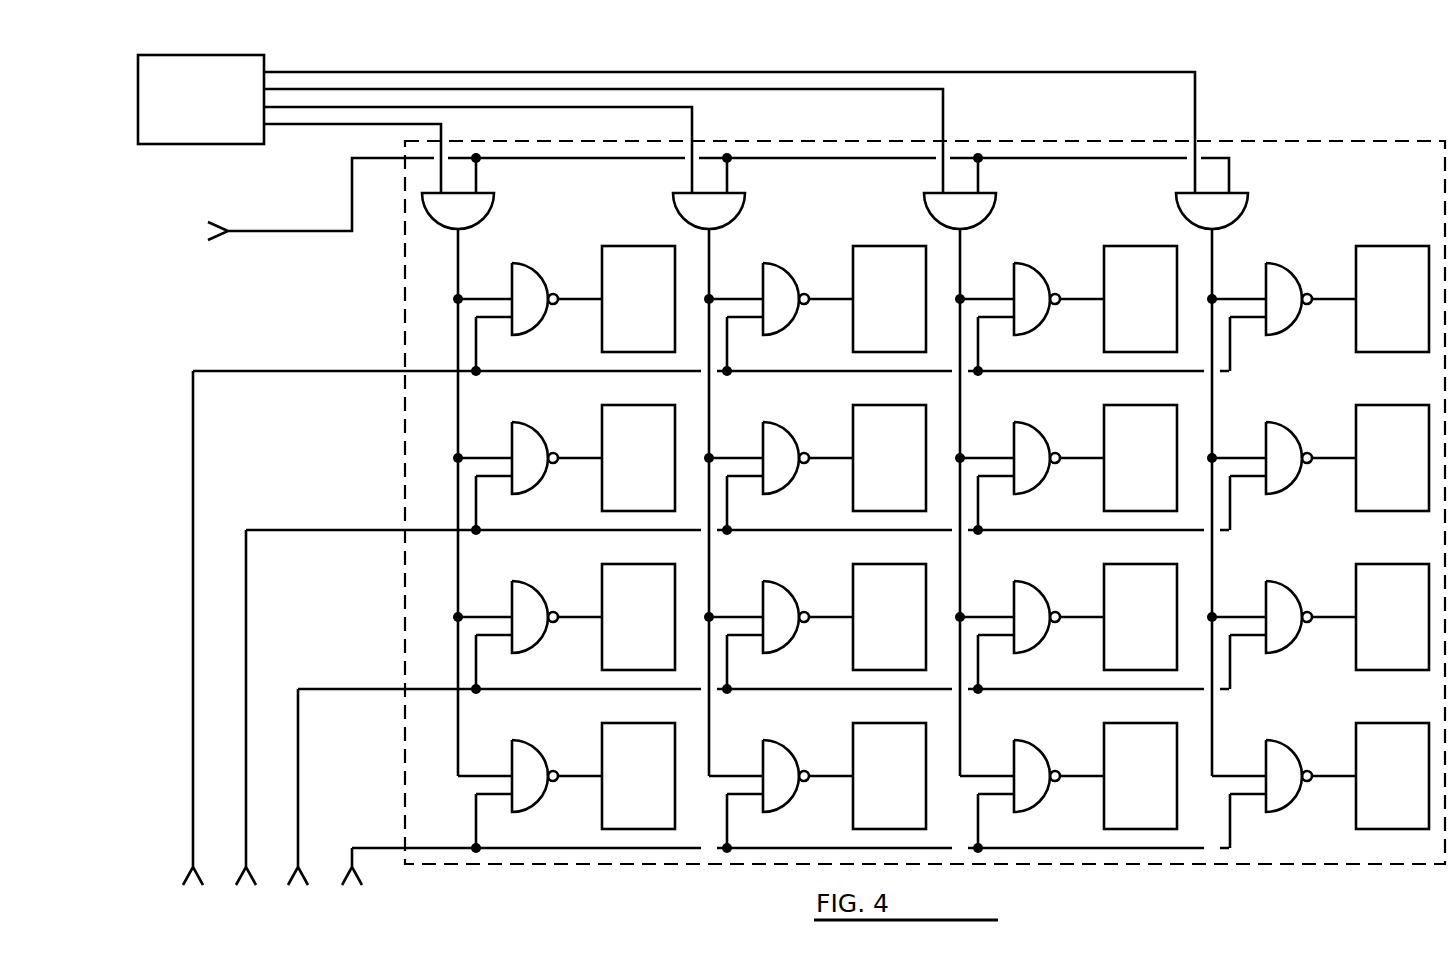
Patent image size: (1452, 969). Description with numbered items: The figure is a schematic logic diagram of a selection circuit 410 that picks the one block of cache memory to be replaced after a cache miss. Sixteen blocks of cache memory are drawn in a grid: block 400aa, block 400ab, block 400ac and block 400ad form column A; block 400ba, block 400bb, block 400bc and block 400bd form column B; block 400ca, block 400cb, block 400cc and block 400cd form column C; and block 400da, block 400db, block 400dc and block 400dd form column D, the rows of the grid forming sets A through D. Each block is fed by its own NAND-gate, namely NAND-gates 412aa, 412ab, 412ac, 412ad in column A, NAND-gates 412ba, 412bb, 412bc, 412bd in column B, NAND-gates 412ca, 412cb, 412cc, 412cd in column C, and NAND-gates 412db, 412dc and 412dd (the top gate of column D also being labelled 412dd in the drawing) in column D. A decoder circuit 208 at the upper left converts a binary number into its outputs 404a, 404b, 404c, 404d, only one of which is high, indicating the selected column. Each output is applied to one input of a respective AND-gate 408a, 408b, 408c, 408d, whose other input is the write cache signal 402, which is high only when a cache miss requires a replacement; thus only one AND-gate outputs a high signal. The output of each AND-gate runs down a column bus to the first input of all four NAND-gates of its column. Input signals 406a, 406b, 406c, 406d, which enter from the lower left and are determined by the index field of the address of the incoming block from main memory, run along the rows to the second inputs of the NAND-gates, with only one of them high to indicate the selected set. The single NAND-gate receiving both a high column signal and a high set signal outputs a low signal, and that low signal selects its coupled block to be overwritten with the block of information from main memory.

The decoder circuit 208 is at (178, 112).
The write cache signal 402 is at (218, 231).
The output of decoder circuit 404a is at (442, 136).
The output of decoder circuit 404b is at (693, 123).
The output of decoder circuit 404c is at (945, 122).
The output of decoder circuit 404d is at (1196, 121).
The input signal 406a is at (190, 884).
The input signal 406b is at (243, 882).
The input signal 406c is at (297, 883).
The input signal 406d is at (354, 883).
The AND-gate 408a is at (457, 213).
The AND-gate 408b is at (710, 212).
The AND-gate 408c is at (961, 212).
The AND-gate 408d is at (1213, 210).
The selection circuit 410 is at (1240, 893).
The NAND-gate 412aa is at (530, 295).
The NAND-gate 412ab is at (530, 454).
The NAND-gate 412ac is at (530, 613).
The NAND-gate 412ad is at (530, 772).
The NAND-gate 412ba is at (781, 295).
The NAND-gate 412bb is at (781, 454).
The NAND-gate 412bc is at (781, 613).
The NAND-gate 412bd is at (781, 772).
The NAND-gate 412ca is at (1032, 295).
The NAND-gate 412cb is at (1032, 454).
The NAND-gate 412cc is at (1032, 613).
The NAND-gate 412cd is at (1032, 772).
The NAND-gate 412dd is at (1284, 533).
The NAND-gate 412db is at (1284, 454).
The NAND-gate 412dc is at (1284, 613).
The block of cache memory 400aa is at (638, 299).
The block of cache memory 400ab is at (638, 458).
The block of cache memory 400ac is at (638, 617).
The block of cache memory 400ad is at (638, 776).
The block of cache memory 400ba is at (889, 299).
The block of cache memory 400bb is at (889, 458).
The block of cache memory 400bc is at (889, 617).
The block of cache memory 400bd is at (889, 776).
The block of cache memory 400ca is at (1140, 299).
The block of cache memory 400cb is at (1140, 458).
The block of cache memory 400cc is at (1140, 617).
The block of cache memory 400cd is at (1140, 776).
The block of cache memory 400da is at (1392, 299).
The block of cache memory 400db is at (1392, 458).
The block of cache memory 400dc is at (1392, 617).
The block of cache memory 400dd is at (1392, 776).